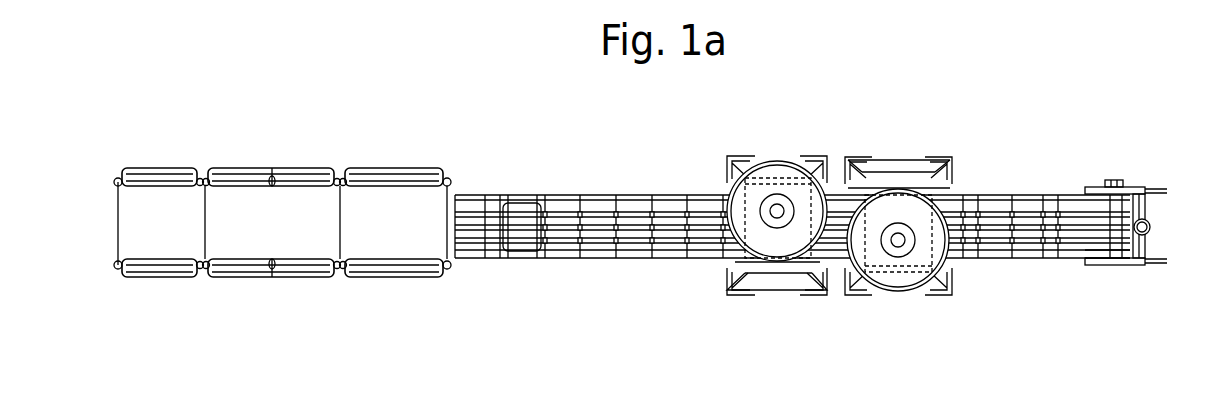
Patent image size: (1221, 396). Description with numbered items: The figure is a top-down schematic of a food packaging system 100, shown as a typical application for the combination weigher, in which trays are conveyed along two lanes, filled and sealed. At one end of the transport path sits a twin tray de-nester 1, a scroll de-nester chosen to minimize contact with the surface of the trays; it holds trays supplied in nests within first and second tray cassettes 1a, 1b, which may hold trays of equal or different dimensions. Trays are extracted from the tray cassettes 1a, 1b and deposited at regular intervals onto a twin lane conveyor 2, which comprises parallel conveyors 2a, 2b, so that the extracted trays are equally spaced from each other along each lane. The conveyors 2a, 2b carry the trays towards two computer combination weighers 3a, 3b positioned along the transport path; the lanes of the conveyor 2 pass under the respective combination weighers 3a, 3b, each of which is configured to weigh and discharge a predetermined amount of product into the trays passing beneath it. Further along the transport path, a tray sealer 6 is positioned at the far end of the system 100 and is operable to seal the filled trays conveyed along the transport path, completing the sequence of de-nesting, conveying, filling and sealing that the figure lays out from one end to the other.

The food packaging system 100 is at (327, 140).
The tray sealer 6 is at (178, 158).
The twin lane conveyor 2 is at (990, 197).
The first parallel conveyor 2a is at (1010, 213).
The second parallel conveyor 2b is at (1005, 247).
The first computer combination weigher 3a is at (778, 160).
The second computer combination weigher 3b is at (898, 165).
The twin tray de-nester 1 is at (1122, 168).
The first tray cassette 1a is at (1125, 205).
The second tray cassette 1b is at (1115, 252).